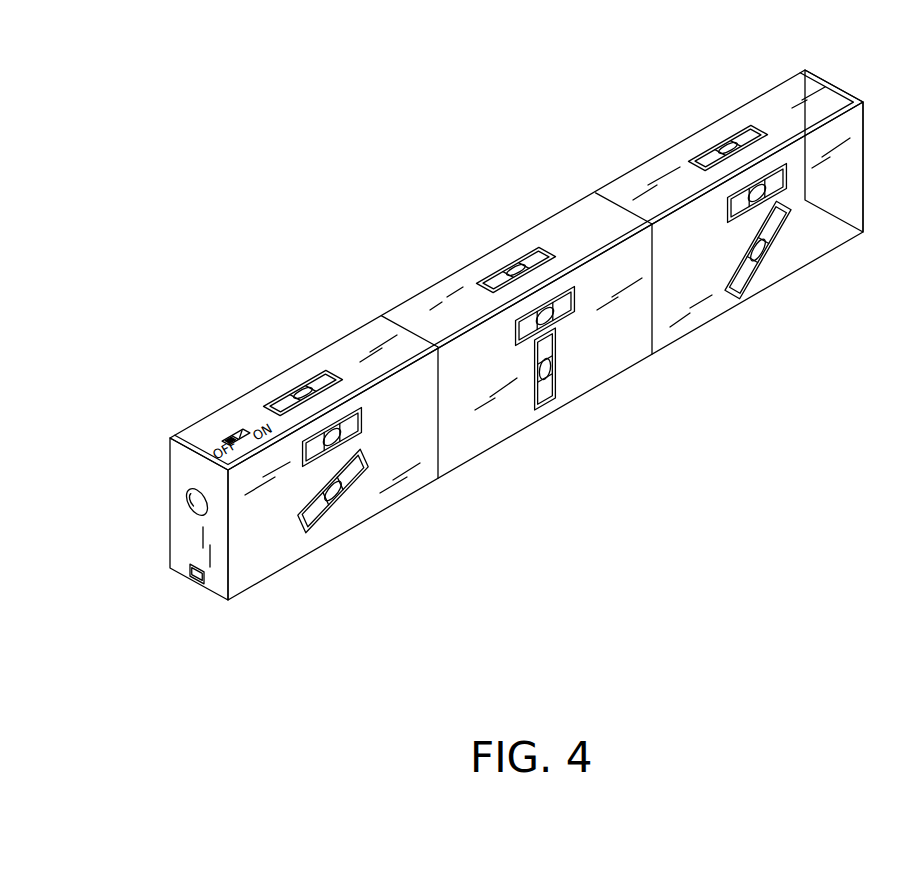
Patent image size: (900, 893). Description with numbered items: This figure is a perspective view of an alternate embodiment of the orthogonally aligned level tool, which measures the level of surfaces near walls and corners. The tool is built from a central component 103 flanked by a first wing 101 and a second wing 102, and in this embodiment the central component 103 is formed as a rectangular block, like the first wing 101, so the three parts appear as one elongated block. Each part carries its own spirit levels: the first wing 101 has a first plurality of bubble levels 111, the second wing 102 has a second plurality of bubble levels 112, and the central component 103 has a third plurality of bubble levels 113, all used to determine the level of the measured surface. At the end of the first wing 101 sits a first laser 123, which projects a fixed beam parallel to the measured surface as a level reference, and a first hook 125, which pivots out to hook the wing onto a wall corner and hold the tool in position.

The first wing 101 is at (280, 557).
The second wing 102 is at (680, 328).
The central component 103 is at (470, 440).
The first plurality of bubble levels 111 is at (378, 435).
The second plurality of bubble levels 112 is at (797, 198).
The third plurality of bubble levels 113 is at (594, 308).
The first laser 123 is at (186, 503).
The first hook 125 is at (197, 583).